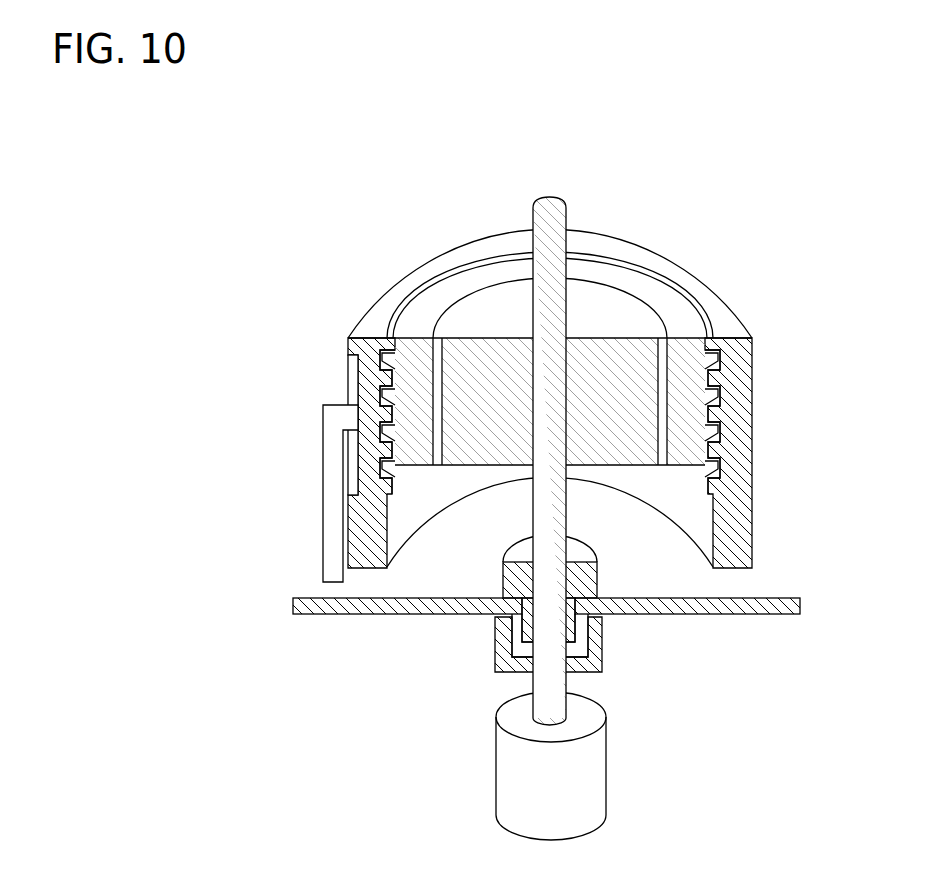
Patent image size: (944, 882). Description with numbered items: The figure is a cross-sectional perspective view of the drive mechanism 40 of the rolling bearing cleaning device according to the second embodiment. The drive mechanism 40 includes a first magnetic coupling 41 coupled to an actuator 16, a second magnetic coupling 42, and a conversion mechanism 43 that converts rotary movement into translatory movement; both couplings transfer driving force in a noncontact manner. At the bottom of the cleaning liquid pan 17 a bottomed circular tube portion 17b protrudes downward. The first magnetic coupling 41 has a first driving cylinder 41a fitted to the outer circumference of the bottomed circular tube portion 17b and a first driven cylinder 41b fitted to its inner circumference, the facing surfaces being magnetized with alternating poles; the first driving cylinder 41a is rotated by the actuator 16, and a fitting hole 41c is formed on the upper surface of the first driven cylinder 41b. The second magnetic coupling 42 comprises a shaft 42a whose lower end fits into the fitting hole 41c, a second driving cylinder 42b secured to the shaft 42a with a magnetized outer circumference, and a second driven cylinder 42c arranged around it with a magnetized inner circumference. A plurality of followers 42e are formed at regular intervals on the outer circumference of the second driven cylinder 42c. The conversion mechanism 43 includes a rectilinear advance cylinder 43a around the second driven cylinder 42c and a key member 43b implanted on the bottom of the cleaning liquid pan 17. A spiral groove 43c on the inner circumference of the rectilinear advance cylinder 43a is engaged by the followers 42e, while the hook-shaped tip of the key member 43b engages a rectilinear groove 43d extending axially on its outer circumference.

The drive mechanism 40 is at (530, 356).
The second magnetic coupling 42 is at (553, 353).
The shaft 42a is at (531, 505).
The second driving cylinder 42b is at (578, 302).
The second driven cylinder 42c is at (647, 288).
The followers 42e is at (377, 391).
The conversion mechanism 43 is at (520, 405).
The rectilinear advance cylinder 43a is at (722, 305).
The key member 43b is at (325, 486).
The spiral groove 43c is at (385, 375).
The rectilinear groove 43d is at (350, 401).
The first magnetic coupling 41 is at (515, 622).
The first driving cylinder 41a is at (495, 673).
The first driven cylinder 41b is at (590, 583).
The fitting hole 41c is at (563, 556).
The cleaning liquid pan 17 is at (551, 663).
The bottomed circular tube portion 17b is at (590, 630).
The actuator 16 is at (597, 782).